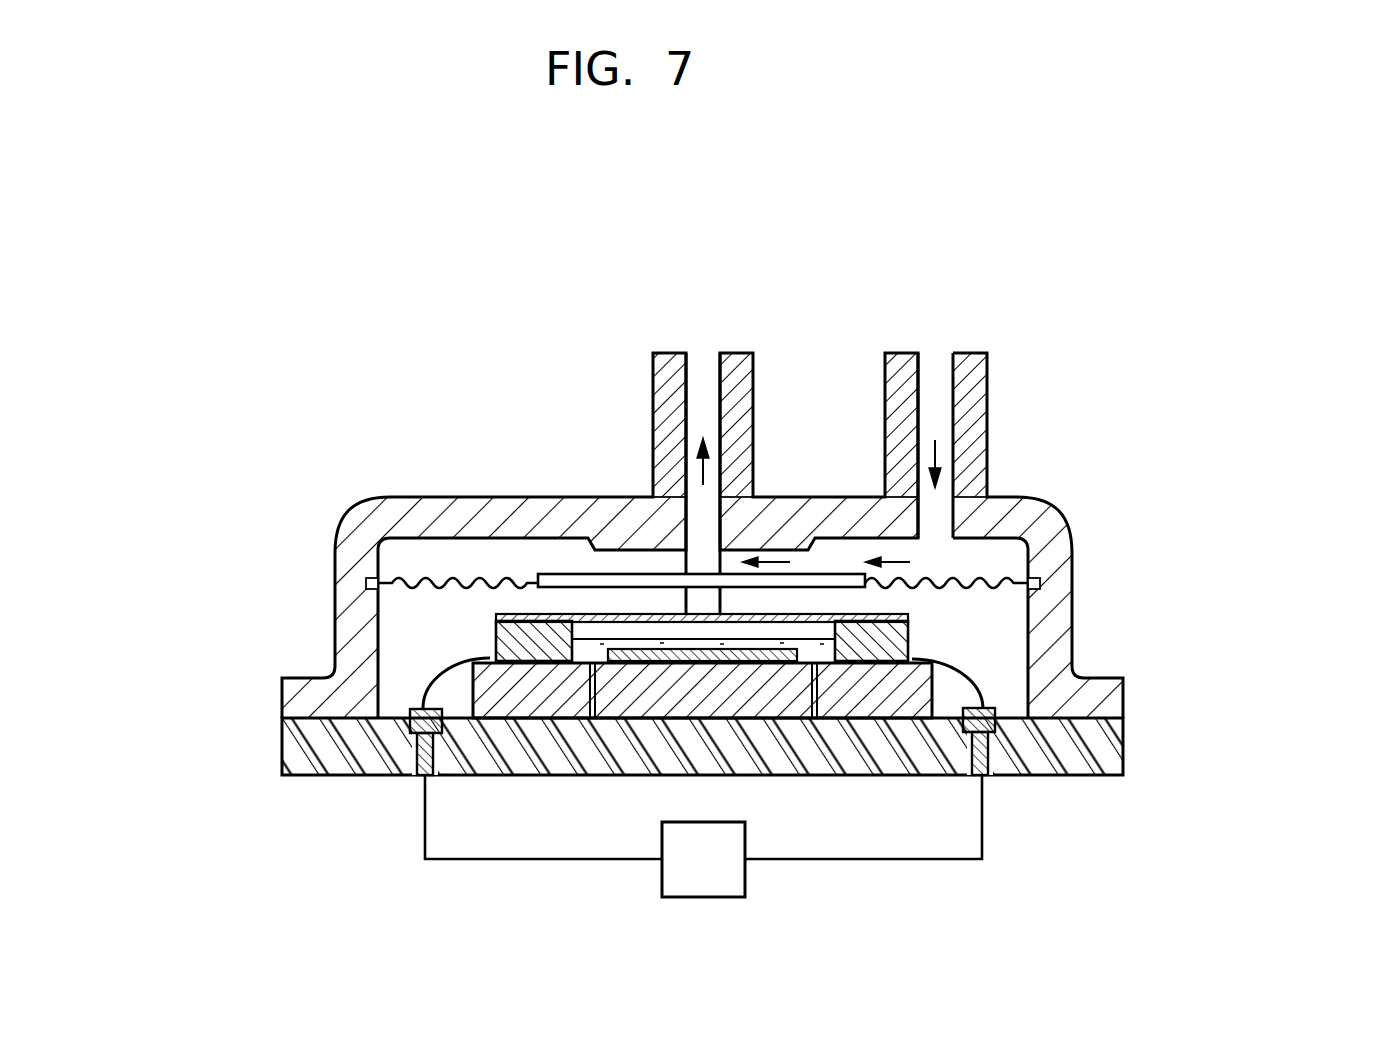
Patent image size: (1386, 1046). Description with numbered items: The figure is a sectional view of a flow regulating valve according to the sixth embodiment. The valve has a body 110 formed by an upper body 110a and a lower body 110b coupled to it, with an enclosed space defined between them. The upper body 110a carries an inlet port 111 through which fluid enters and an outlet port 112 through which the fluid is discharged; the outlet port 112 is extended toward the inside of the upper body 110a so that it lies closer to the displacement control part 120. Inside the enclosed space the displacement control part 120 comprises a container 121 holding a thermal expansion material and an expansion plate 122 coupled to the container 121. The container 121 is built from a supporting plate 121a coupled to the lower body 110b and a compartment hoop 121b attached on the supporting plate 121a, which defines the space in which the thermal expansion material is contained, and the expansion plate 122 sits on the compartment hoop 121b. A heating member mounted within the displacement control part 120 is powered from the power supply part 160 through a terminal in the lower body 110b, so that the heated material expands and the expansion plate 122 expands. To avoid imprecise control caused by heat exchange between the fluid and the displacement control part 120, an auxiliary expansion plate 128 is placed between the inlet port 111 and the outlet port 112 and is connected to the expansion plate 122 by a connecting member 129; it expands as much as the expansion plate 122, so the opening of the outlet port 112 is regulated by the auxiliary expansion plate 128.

The body 110 is at (600, 564).
The upper body 110a is at (293, 703).
The lower body 110b is at (293, 750).
The inlet port 111 is at (943, 379).
The outlet port 112 is at (712, 379).
The displacement control part 120 is at (873, 568).
The container 121 is at (873, 652).
The supporting plate 121a is at (925, 688).
The compartment hoop 121b is at (905, 641).
The expansion plate 122 is at (900, 610).
The auxiliary expansion plate 128 is at (563, 578).
The connecting member 129 is at (703, 595).
The power supply part 160 is at (662, 884).